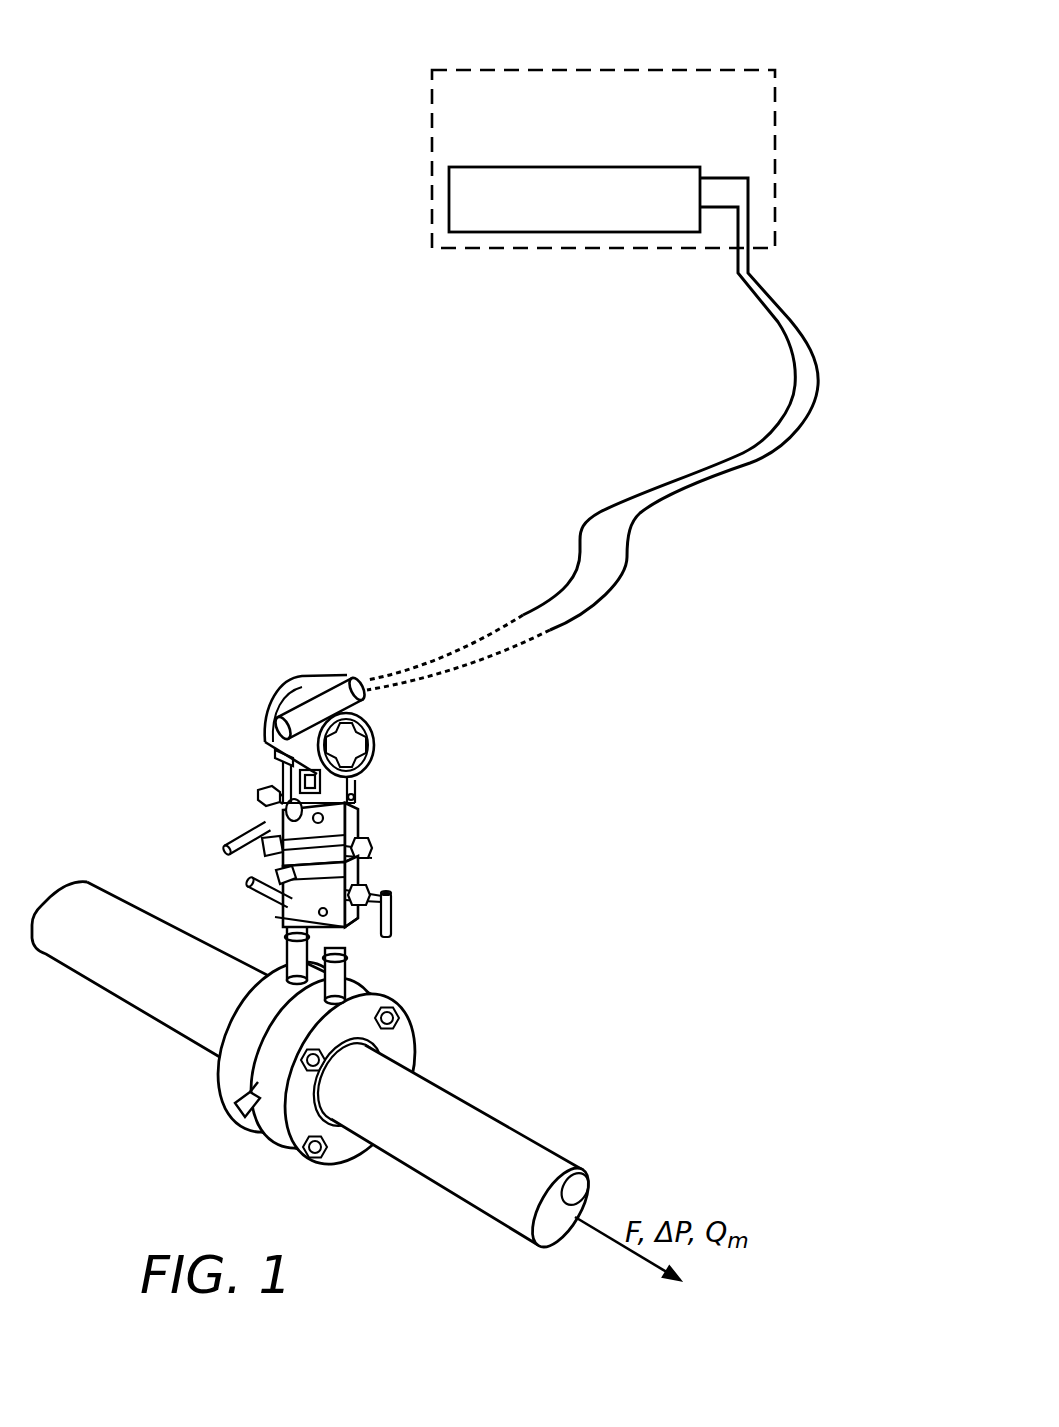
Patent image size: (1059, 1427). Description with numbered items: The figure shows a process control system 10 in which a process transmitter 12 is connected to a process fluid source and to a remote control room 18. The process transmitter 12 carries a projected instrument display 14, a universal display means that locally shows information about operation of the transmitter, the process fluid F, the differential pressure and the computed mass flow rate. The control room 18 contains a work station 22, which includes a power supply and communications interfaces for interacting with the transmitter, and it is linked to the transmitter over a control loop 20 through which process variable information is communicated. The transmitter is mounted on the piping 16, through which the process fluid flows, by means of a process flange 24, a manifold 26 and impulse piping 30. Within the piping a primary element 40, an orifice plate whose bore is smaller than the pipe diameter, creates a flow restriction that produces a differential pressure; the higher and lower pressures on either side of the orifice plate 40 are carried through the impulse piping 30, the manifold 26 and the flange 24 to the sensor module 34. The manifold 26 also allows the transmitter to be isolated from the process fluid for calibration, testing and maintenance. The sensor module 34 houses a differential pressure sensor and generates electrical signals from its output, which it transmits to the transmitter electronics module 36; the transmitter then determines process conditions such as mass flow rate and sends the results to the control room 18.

The process control system 10 is at (215, 327).
The process transmitter 12 is at (312, 678).
The projected instrument display 14 is at (350, 745).
The piping 16 is at (457, 1070).
The control room 18 is at (708, 70).
The control loop 20 is at (750, 452).
The work station 22 is at (527, 167).
The process flange 24 is at (362, 832).
The manifold 26 is at (348, 877).
The impulse piping 30 is at (352, 965).
The sensor module 34 is at (358, 798).
The transmitter electronics module 36 is at (267, 743).
The primary element 40 is at (232, 1106).